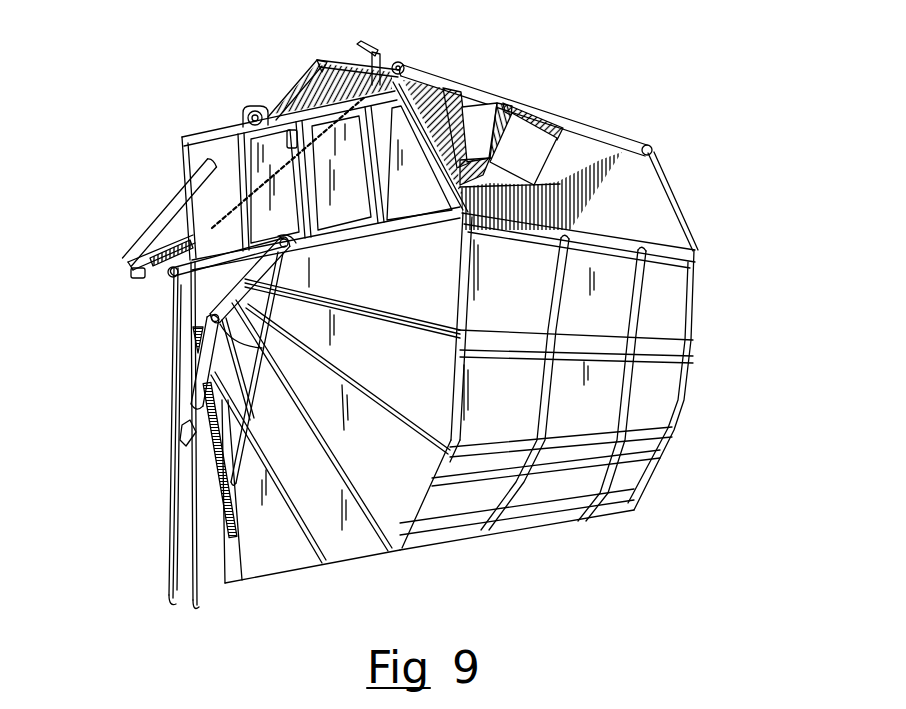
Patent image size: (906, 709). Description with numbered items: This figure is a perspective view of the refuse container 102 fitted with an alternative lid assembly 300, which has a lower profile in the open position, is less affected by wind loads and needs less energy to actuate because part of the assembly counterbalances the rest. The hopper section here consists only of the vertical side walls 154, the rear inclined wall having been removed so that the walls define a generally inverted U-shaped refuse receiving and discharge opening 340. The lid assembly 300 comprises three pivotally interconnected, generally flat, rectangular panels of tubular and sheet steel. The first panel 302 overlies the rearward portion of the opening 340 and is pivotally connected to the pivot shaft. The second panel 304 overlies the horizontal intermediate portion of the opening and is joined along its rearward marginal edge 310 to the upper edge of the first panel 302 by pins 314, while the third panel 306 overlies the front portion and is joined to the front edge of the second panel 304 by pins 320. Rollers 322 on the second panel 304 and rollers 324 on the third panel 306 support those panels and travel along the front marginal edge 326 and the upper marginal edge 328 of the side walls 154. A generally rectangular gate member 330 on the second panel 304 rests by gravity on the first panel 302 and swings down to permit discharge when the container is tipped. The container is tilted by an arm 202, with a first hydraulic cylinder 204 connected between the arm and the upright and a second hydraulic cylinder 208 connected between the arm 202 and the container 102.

The container 102 is at (728, 243).
The side walls 154 is at (387, 192).
The arm 202 is at (180, 312).
The first hydraulic cylinder 204 is at (197, 373).
The second hydraulic cylinder 208 is at (280, 255).
The lid assembly 300 is at (688, 152).
The first panel 302 is at (157, 298).
The second panel 304 is at (150, 230).
The third panel 306 is at (515, 100).
The rearward marginal edge 310 is at (127, 260).
The pins 314 is at (133, 270).
The pins 320 is at (320, 60).
The rollers 322 is at (253, 110).
The rollers 324 is at (402, 64).
The front marginal edge 326 is at (277, 97).
The upper marginal edge 328 is at (443, 86).
The gate member 330 is at (145, 282).
The refuse receiving and discharge opening 340 is at (658, 208).